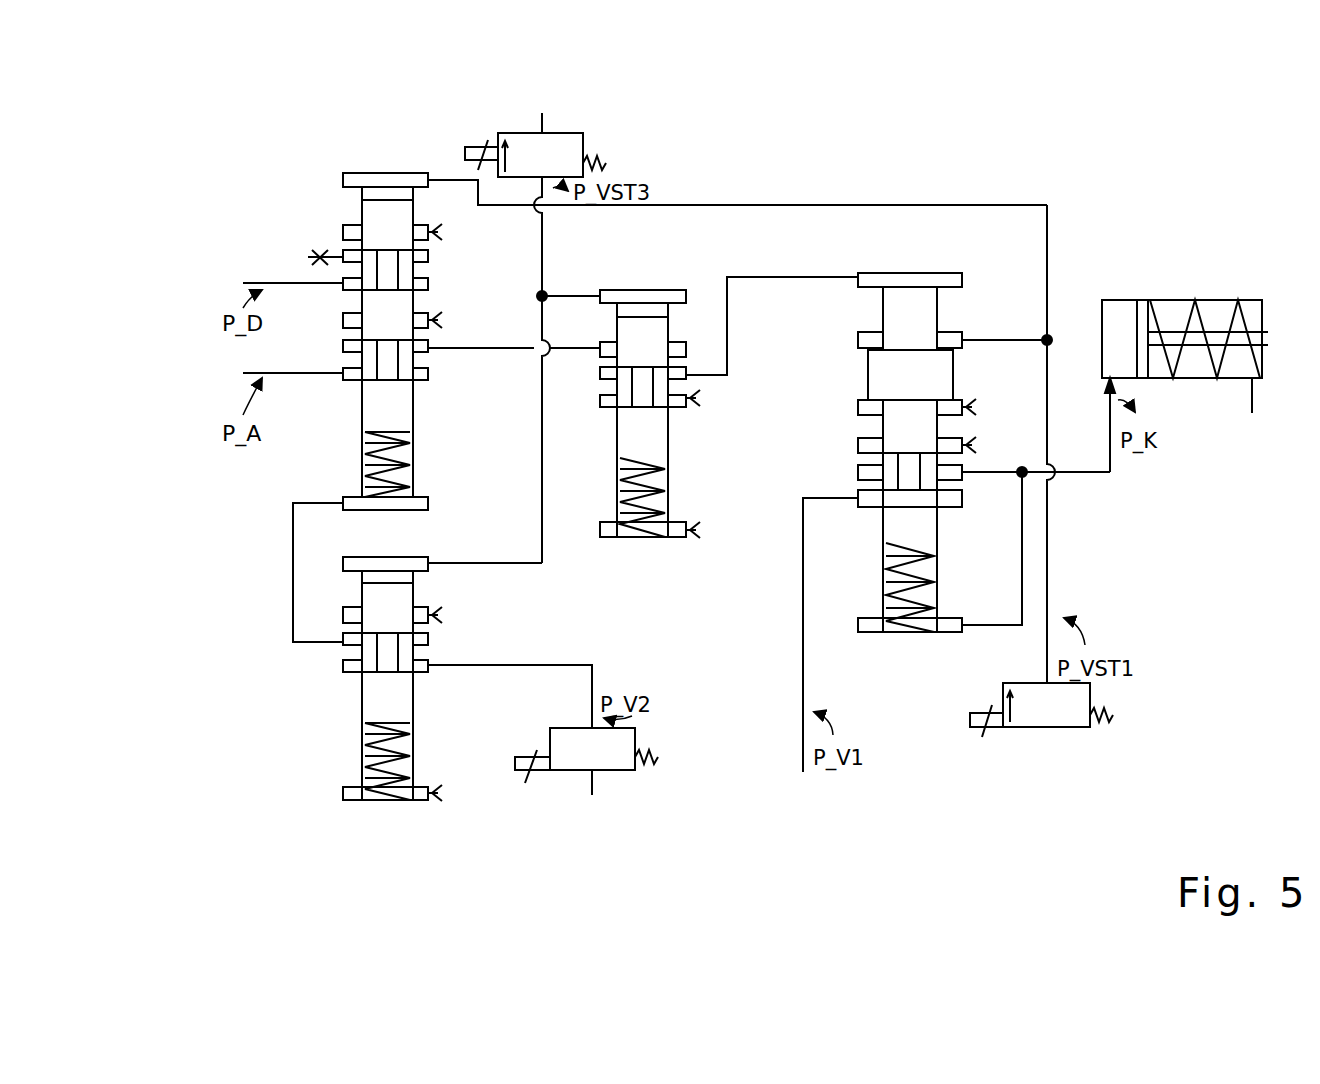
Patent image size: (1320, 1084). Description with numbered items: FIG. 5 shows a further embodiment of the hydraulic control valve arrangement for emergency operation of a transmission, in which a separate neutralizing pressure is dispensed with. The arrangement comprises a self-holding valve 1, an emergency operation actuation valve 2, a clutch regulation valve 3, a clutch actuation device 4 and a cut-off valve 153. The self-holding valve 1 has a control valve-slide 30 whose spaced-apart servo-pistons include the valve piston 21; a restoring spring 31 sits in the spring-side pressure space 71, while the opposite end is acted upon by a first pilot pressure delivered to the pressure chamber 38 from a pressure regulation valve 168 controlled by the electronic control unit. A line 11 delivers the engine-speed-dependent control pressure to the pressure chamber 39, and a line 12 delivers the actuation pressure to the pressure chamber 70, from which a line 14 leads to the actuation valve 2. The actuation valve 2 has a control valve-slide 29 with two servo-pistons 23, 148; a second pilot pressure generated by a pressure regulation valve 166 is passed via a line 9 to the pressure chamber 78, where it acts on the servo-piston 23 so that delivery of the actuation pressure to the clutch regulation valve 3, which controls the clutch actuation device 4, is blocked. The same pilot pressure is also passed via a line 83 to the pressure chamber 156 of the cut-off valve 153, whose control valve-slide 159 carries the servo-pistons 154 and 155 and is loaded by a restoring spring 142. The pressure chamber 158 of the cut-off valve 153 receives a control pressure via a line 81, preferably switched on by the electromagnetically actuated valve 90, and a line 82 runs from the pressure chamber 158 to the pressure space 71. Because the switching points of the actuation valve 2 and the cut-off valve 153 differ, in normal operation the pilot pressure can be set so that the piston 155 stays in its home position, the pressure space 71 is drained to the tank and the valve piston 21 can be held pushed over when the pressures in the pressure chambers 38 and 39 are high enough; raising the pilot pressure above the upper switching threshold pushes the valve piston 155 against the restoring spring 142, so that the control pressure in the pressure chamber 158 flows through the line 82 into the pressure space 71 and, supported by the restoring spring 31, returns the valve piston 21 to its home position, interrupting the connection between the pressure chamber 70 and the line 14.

The self-holding valve 1 is at (322, 534).
The emergency operation actuation valve 2 is at (708, 297).
The clutch regulation valve 3 is at (838, 415).
The clutch actuation device 4 is at (1190, 405).
The line 9 is at (500, 345).
The line 11 is at (340, 282).
The line 12 is at (253, 373).
The line 14 is at (540, 270).
The servo-piston 21 is at (358, 327).
The servo-piston 23 is at (640, 340).
The control valve-slide 29 is at (605, 415).
The control valve-slide 30 is at (355, 398).
The restoring spring 31 is at (345, 505).
The pressure chamber 38 is at (343, 178).
The pressure chamber 39 is at (340, 282).
The pressure chamber 70 is at (363, 442).
The pressure space 71 is at (360, 555).
The pressure chamber 78 is at (673, 297).
The line 81 is at (545, 665).
The line 82 is at (343, 633).
The line 83 is at (488, 568).
The electromagnetically actuated valve 90 is at (608, 753).
The restoring spring 142 is at (383, 800).
The servo-piston 148 is at (648, 440).
The cut-off valve 153 is at (362, 740).
The servo-piston 154 is at (390, 703).
The servo-piston 155 is at (390, 610).
The pressure chamber 156 is at (365, 585).
The pressure chamber 158 is at (357, 697).
The control valve-slide 159 is at (343, 738).
The pressure regulation valve 166 is at (562, 137).
The pressure regulation valve 168 is at (1055, 727).